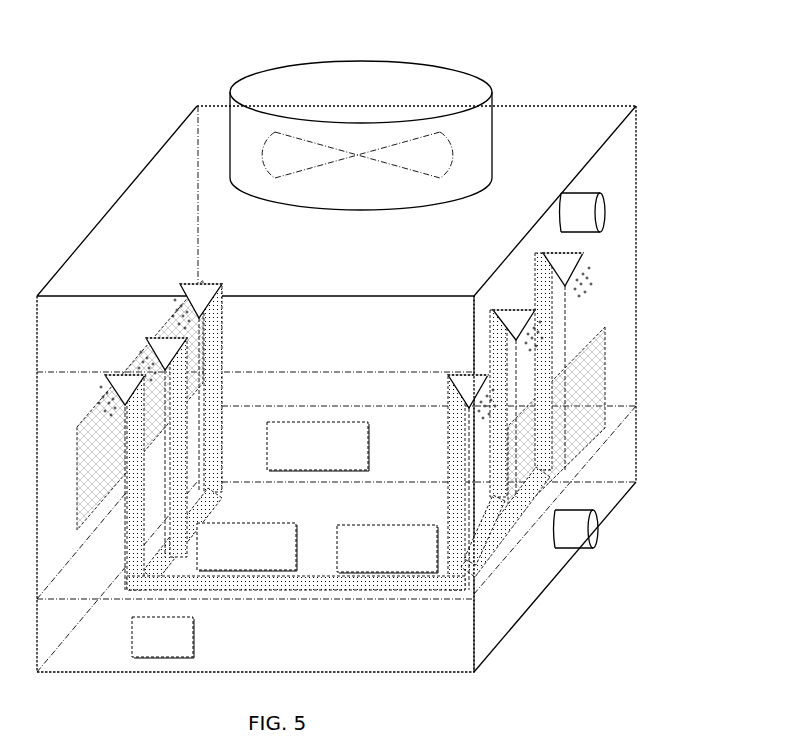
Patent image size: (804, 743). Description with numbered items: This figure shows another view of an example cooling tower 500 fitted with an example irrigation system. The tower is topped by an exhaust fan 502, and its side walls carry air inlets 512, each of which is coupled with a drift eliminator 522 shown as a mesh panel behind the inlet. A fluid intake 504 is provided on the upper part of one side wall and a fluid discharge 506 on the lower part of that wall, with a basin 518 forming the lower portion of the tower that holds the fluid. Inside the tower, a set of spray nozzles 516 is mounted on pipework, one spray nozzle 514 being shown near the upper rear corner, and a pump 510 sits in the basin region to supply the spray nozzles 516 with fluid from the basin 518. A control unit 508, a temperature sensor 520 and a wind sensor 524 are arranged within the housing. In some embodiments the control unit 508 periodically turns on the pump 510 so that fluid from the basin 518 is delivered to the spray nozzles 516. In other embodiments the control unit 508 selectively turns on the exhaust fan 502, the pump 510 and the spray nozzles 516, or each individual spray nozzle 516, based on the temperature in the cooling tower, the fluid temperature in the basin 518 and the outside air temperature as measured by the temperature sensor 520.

The air purification device housing 500 is at (590, 119).
The exhaust fan 502 is at (442, 86).
The fluid intake 504 is at (603, 202).
The fluid discharge 506 is at (600, 525).
The control unit 508 is at (248, 523).
The pump 510 is at (129, 632).
The air inlet 512 is at (608, 368).
The spray nozzle 514 is at (580, 258).
The spray nozzle 516 is at (213, 340).
The basin 518 is at (498, 615).
The temperature sensor 520 is at (348, 523).
The mesh filter 522 is at (608, 320).
The wind sensor 524 is at (303, 422).